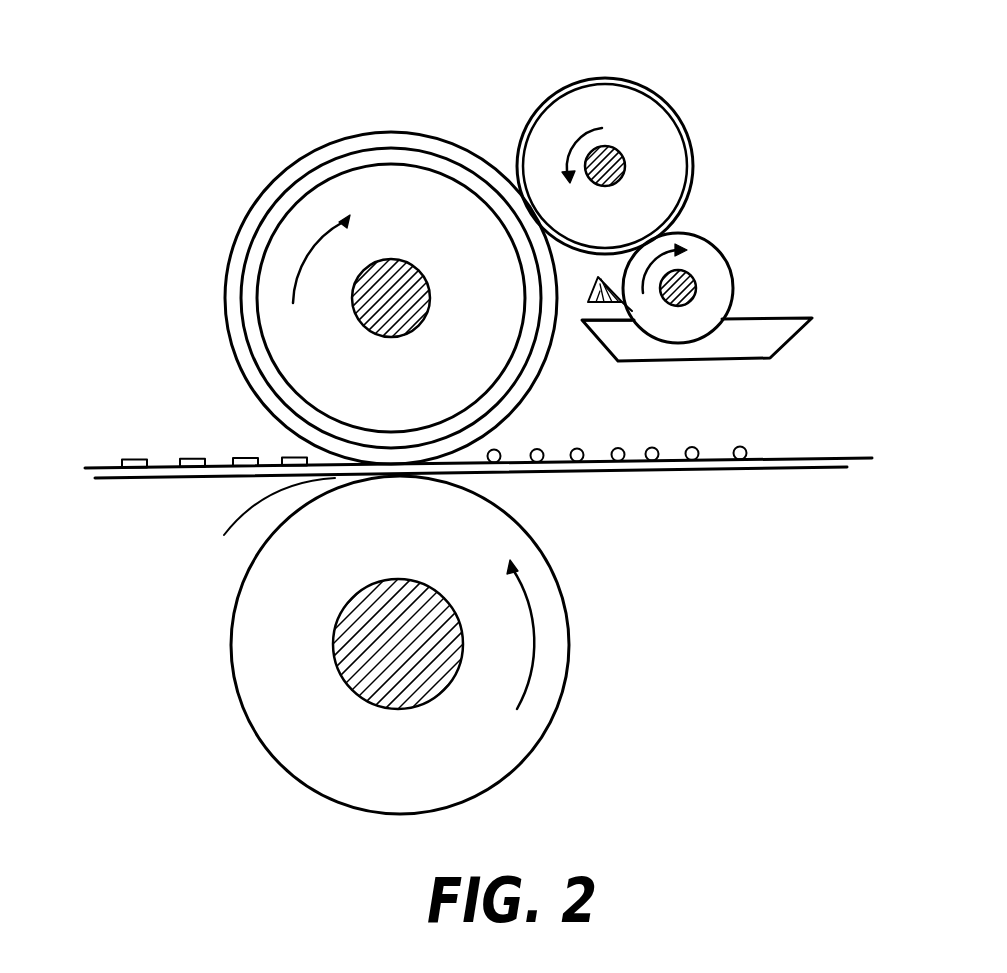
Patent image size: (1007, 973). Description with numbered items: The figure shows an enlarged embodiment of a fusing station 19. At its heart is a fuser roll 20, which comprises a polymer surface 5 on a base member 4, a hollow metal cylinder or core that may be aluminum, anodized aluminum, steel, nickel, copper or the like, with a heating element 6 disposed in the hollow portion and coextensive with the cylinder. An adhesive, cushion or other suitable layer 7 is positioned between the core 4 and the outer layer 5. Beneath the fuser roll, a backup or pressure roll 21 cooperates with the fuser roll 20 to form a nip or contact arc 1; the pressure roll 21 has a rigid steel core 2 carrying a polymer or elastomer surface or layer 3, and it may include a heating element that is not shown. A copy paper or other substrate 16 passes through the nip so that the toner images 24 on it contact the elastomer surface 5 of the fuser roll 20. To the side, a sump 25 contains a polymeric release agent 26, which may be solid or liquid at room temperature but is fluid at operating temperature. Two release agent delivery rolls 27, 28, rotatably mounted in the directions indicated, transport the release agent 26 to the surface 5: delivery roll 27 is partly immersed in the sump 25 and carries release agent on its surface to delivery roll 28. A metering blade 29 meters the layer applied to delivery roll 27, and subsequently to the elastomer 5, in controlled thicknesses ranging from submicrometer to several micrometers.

The nip or contact arc 1 is at (265, 523).
The rigid steel core 2 is at (340, 677).
The polymer or elastomer surface layer 3 is at (485, 757).
The base member 4 is at (427, 170).
The polymer surface 5 is at (290, 165).
The heating element 6 is at (397, 258).
The cushion layer 7 is at (457, 165).
The substrate 16 is at (713, 473).
The fusing station 19 is at (195, 55).
The fuser roll 20 is at (183, 292).
The pressure roll 21 is at (156, 600).
The toner images 24 is at (741, 446).
The sump 25 is at (788, 341).
The polymeric release agent 26 is at (763, 317).
The release agent delivery roll 27 is at (727, 250).
The release agent delivery roll 28 is at (693, 145).
The metering blade 29 is at (587, 290).